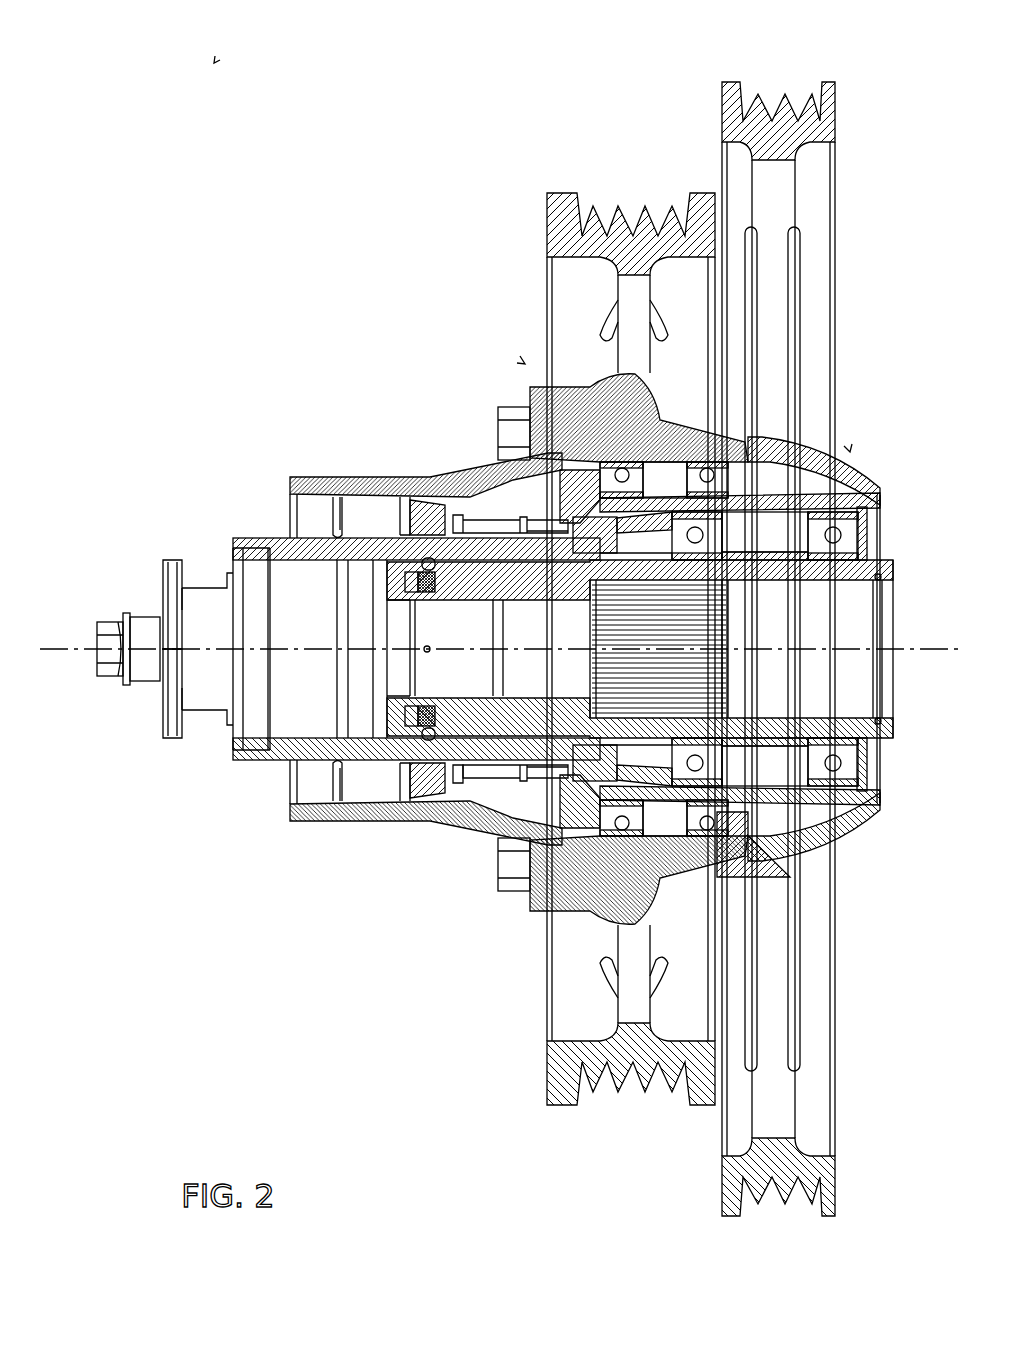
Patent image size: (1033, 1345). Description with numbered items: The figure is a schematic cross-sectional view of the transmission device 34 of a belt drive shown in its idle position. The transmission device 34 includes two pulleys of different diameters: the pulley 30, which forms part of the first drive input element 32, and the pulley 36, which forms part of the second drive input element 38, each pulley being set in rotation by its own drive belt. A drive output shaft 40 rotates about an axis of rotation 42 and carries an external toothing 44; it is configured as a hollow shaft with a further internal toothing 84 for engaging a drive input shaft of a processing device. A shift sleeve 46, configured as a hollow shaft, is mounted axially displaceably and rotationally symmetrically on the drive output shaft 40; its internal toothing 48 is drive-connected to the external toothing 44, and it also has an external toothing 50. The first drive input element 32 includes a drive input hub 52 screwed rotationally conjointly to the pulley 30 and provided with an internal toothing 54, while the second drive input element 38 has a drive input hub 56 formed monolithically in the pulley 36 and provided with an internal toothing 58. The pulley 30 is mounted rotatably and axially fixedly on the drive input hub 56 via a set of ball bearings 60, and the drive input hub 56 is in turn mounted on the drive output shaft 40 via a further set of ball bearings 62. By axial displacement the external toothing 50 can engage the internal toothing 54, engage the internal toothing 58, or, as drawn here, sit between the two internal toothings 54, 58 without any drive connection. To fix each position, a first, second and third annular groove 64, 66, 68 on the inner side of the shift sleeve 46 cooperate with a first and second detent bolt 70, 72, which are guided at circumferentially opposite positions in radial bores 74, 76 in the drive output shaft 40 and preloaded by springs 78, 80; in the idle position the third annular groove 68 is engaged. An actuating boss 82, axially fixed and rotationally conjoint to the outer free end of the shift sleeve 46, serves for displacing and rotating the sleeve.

The pulley 30 is at (637, 232).
The first drive input element 32 is at (525, 364).
The transmission device 34 is at (215, 63).
The pulley 36 is at (763, 110).
The second drive input element 38 is at (850, 452).
The drive output shaft 40 is at (472, 680).
The axis of rotation 42 is at (57, 645).
The external toothing 44 is at (555, 552).
The shift sleeve 46 is at (287, 538).
The internal toothing 48 is at (557, 850).
The external toothing 50 is at (497, 473).
The drive input hub 52 is at (438, 478).
The internal toothing 54 is at (453, 477).
The drive input hub 56 is at (773, 820).
The internal toothing 58 is at (643, 523).
The ball bearings 60 is at (707, 470).
The ball bearings 62 is at (830, 542).
The first annular groove 64 is at (493, 763).
The second annular groove 66 is at (377, 763).
The third annular groove 68 is at (437, 770).
The first detent bolt 70 is at (405, 575).
The second detent bolt 72 is at (425, 742).
The radial bore 74 is at (400, 588).
The radial bore 76 is at (460, 760).
The spring 78 is at (418, 592).
The spring 80 is at (443, 767).
The actuating boss 82 is at (142, 672).
The further internal toothing 84 is at (728, 660).